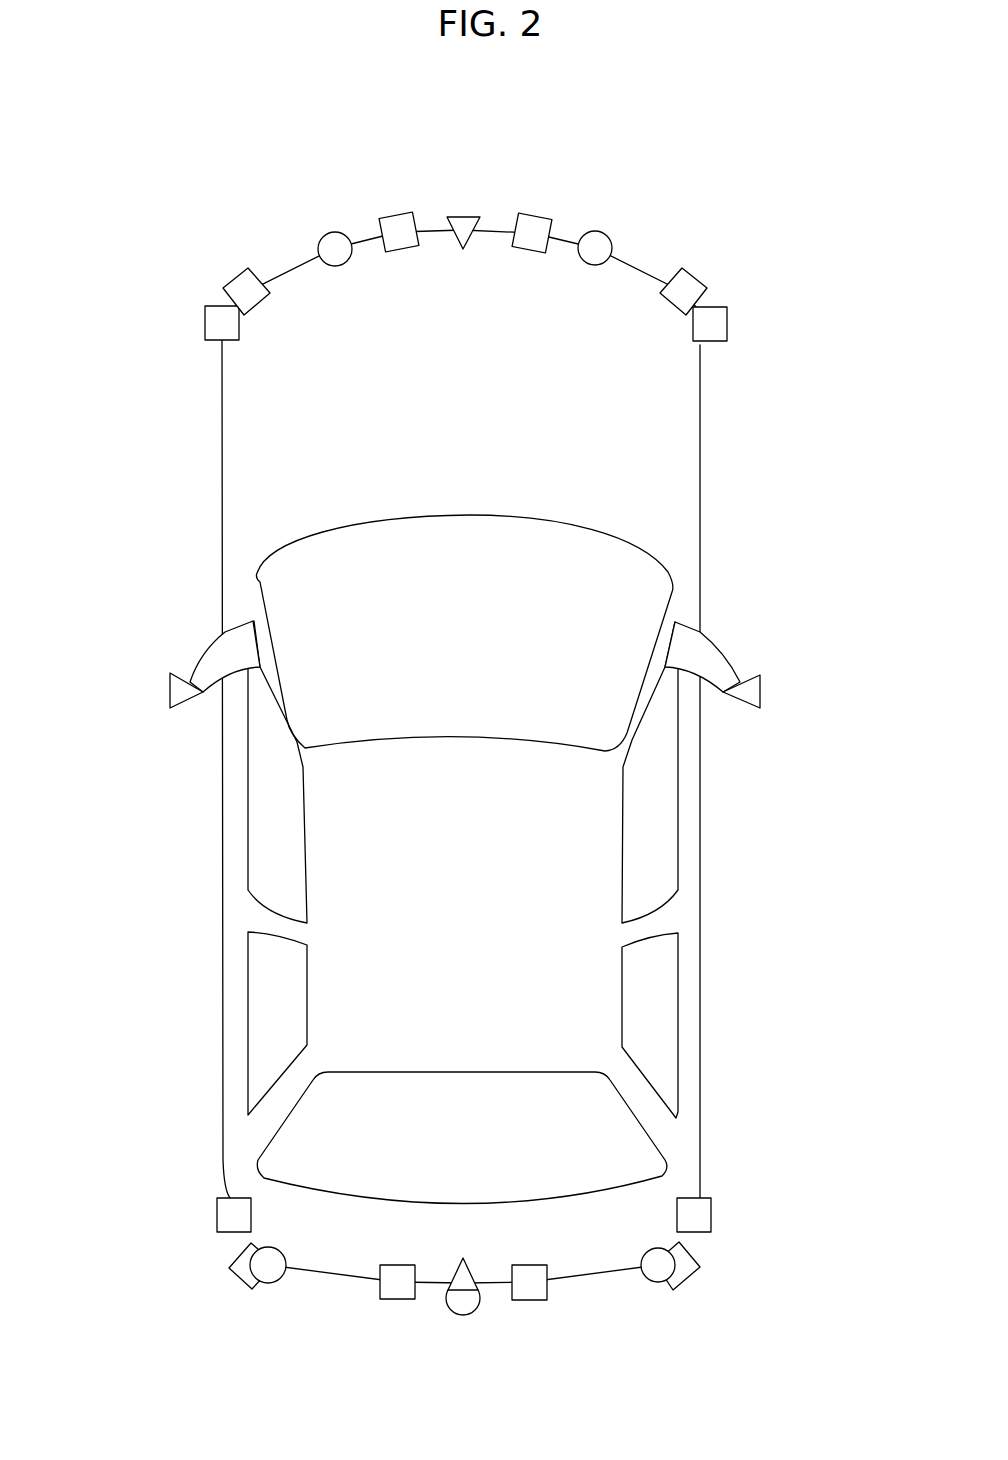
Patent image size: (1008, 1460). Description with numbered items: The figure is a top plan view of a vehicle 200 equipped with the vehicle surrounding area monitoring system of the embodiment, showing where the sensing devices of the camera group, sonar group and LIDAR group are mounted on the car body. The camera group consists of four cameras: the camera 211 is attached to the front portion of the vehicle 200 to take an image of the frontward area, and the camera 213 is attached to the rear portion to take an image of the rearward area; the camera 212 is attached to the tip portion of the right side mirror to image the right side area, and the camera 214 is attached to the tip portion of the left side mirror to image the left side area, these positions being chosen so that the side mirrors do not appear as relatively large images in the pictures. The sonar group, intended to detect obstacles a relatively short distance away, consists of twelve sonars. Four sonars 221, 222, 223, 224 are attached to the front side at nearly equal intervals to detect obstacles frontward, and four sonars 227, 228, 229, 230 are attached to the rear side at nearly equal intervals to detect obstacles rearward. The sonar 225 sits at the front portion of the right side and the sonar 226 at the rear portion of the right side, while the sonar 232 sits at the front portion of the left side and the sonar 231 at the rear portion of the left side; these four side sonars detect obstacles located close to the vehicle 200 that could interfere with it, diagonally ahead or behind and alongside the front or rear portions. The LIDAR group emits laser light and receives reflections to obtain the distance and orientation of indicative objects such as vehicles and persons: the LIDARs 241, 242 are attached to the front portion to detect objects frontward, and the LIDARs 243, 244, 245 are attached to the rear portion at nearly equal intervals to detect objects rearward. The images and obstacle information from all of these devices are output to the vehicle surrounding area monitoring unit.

The vehicle 200 is at (628, 313).
The camera 211 is at (457, 213).
The camera 212 is at (760, 688).
The camera 213 is at (463, 1283).
The camera 214 is at (170, 690).
The sonar 221 is at (223, 288).
The sonar 222 is at (398, 213).
The sonar 223 is at (532, 215).
The sonar 224 is at (707, 288).
The sonar 225 is at (727, 326).
The sonar 226 is at (711, 1214).
The sonar 227 is at (700, 1267).
The sonar 228 is at (530, 1300).
The sonar 229 is at (403, 1300).
The sonar 230 is at (229, 1268).
The sonar 231 is at (217, 1218).
The sonar 232 is at (205, 327).
The LIDAR 241 is at (335, 232).
The LIDAR 242 is at (597, 231).
The LIDAR 243 is at (660, 1283).
The LIDAR 244 is at (458, 1317).
The LIDAR 245 is at (273, 1284).